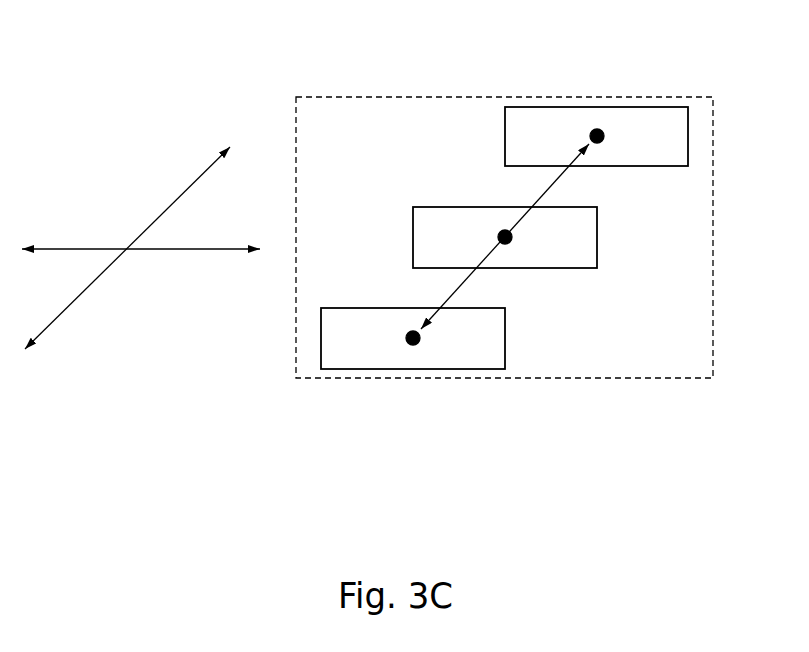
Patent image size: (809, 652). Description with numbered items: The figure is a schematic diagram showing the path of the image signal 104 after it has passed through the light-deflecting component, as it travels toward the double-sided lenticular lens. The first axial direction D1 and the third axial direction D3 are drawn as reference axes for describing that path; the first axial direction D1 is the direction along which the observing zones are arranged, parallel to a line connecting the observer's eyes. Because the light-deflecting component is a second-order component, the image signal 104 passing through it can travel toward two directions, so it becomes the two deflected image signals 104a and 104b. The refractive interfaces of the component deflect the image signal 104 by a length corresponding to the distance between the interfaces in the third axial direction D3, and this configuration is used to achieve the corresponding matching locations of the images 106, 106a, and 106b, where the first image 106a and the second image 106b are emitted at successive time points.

The image signal 104 is at (600, 258).
The deflected image signal 104a is at (692, 139).
The deflected image signal 104b is at (508, 340).
The image 106 is at (499, 230).
The first image 106a is at (597, 125).
The second image 106b is at (403, 333).
The first axial direction D1 is at (63, 247).
The third axial direction D3 is at (198, 177).